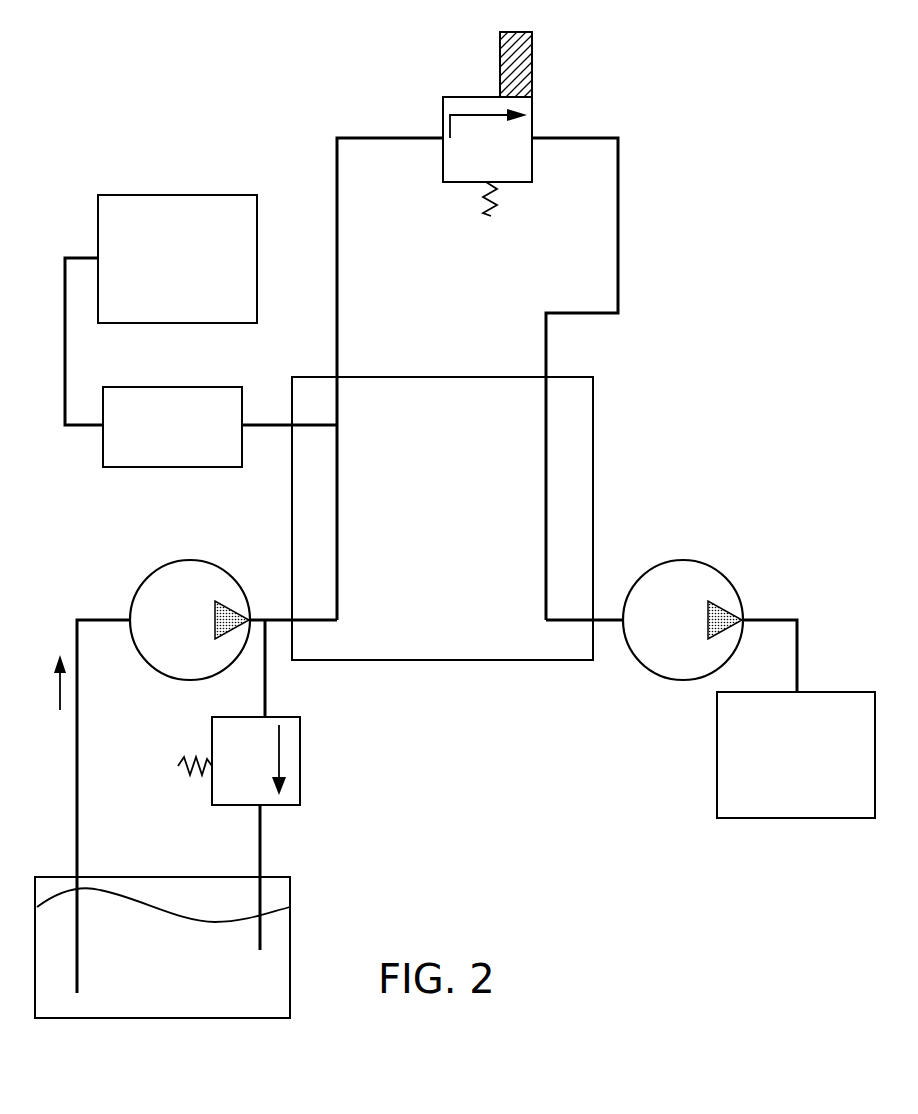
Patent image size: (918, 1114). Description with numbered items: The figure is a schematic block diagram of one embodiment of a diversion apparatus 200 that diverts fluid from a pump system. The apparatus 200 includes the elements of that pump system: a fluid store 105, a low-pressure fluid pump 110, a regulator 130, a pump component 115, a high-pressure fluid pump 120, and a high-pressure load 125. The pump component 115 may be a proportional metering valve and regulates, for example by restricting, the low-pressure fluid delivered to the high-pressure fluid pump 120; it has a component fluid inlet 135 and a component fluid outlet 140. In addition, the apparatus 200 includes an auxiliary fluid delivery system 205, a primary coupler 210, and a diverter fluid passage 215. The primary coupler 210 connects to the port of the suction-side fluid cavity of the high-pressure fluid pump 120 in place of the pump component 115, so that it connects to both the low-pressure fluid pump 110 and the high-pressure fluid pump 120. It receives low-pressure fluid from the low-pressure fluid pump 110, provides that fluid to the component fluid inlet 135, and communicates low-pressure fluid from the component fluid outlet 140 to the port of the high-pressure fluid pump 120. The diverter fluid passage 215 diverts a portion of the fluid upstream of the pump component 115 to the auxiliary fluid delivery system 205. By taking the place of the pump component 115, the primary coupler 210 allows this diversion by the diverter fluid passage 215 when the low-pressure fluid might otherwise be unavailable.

The diversion apparatus 200 is at (133, 83).
The fluid store 105 is at (162, 947).
The low-pressure fluid pump 110 is at (148, 576).
The pump component 115 is at (448, 96).
The high-pressure fluid pump 120 is at (722, 570).
The high-pressure load 125 is at (796, 755).
The regulator 130 is at (302, 769).
The component fluid inlet 135 is at (402, 137).
The component fluid outlet 140 is at (610, 137).
The auxiliary fluid delivery system 205 is at (177, 259).
The primary coupler 210 is at (442, 518).
The diverter fluid passage 215 is at (201, 362).